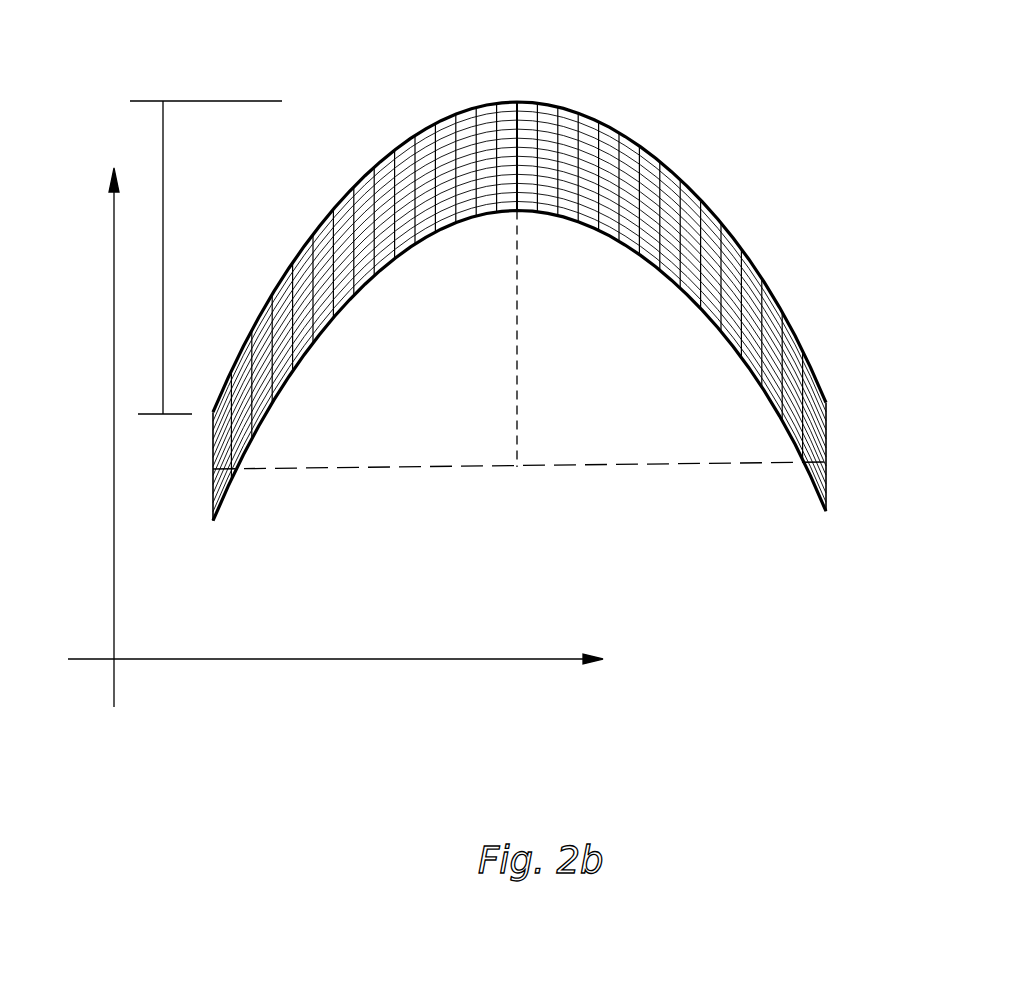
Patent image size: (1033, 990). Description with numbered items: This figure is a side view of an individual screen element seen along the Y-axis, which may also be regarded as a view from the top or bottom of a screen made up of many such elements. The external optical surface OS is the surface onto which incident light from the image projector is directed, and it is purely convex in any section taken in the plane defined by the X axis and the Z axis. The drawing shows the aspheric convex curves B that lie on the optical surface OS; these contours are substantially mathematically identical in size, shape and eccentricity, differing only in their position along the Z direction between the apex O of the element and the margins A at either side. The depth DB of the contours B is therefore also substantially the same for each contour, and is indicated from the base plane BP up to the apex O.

The apex O is at (516, 101).
The optical surface OS is at (412, 178).
The aspheric convex curves B is at (692, 181).
The margins A is at (213, 521).
The base plane BP is at (550, 467).
The depth of the contours DB is at (163, 243).
The X-axis X is at (323, 661).
The Z-axis Z is at (110, 455).